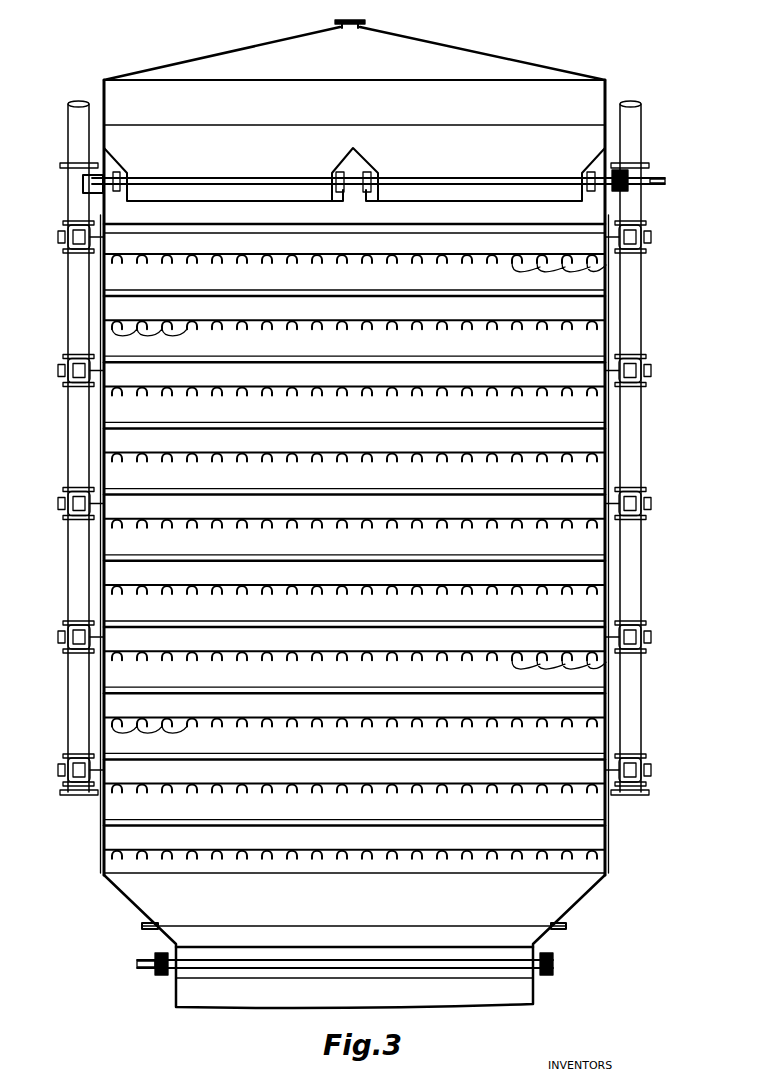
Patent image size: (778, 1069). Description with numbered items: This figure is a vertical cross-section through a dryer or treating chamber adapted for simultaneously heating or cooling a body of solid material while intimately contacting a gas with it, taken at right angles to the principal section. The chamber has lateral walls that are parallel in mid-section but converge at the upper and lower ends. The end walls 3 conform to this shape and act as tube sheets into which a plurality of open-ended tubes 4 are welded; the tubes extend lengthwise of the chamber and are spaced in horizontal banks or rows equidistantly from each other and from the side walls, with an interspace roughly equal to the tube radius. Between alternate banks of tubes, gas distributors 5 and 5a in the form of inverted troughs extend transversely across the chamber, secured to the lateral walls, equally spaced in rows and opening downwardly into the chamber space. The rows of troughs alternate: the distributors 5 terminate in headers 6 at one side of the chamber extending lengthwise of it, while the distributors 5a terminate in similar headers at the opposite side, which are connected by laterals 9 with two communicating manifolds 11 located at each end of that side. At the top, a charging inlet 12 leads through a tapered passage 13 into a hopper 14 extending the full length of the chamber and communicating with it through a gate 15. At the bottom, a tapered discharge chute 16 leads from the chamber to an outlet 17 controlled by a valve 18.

The end wall 3 is at (104, 425).
The tube 4 is at (578, 437).
The gas distributor 5 is at (112, 334).
The gas distributor 5a is at (565, 272).
The header 6 is at (573, 838).
The lateral 9 is at (93, 258).
The manifold 11 is at (70, 287).
The charging inlet 12 is at (365, 23).
The tapered passage 13 is at (475, 62).
The hopper 14 is at (597, 104).
The gate 15 is at (148, 213).
The tapered discharge chute 16 is at (558, 913).
The outlet 17 is at (172, 937).
The valve 18 is at (196, 973).